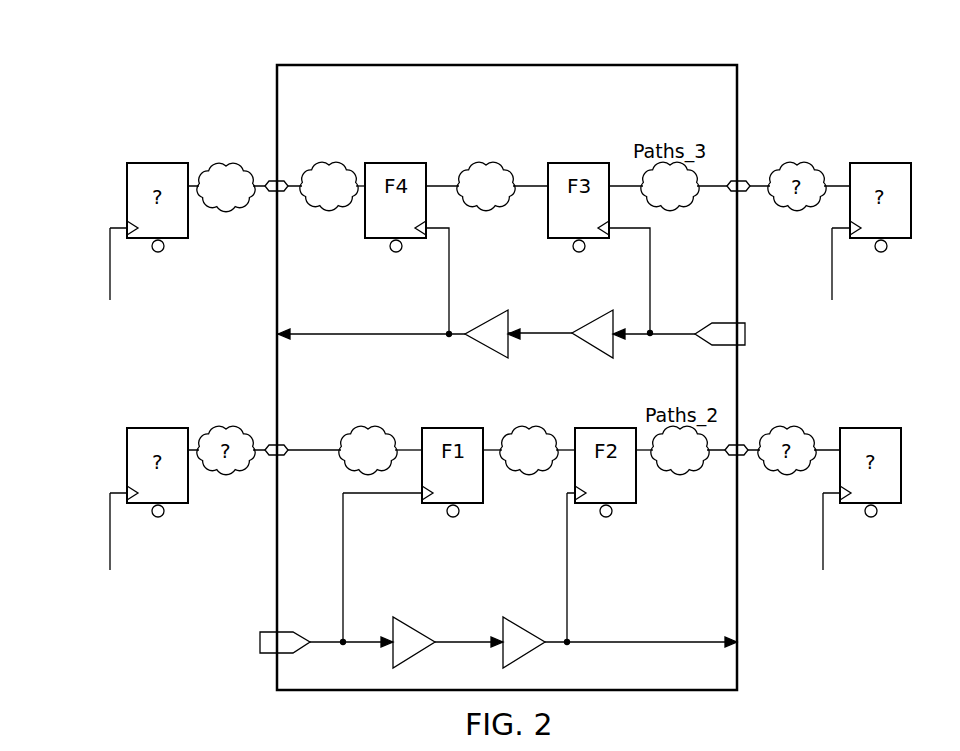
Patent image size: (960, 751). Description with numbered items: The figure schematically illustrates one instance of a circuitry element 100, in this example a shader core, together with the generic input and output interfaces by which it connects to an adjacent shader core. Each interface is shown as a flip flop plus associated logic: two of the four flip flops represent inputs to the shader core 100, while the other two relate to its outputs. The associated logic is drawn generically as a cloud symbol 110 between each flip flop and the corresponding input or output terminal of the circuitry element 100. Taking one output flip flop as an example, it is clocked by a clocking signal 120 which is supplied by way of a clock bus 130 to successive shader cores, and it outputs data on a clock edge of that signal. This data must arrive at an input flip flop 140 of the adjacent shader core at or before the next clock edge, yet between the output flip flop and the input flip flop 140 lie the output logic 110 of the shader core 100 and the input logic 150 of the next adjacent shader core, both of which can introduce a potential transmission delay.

The circuitry element 100 is at (684, 65).
The cloud symbol 110 is at (330, 208).
The clocking signal 120 is at (449, 287).
The clock bus 130 is at (323, 334).
The input flip flop 140 is at (158, 162).
The input logic 150 is at (225, 166).